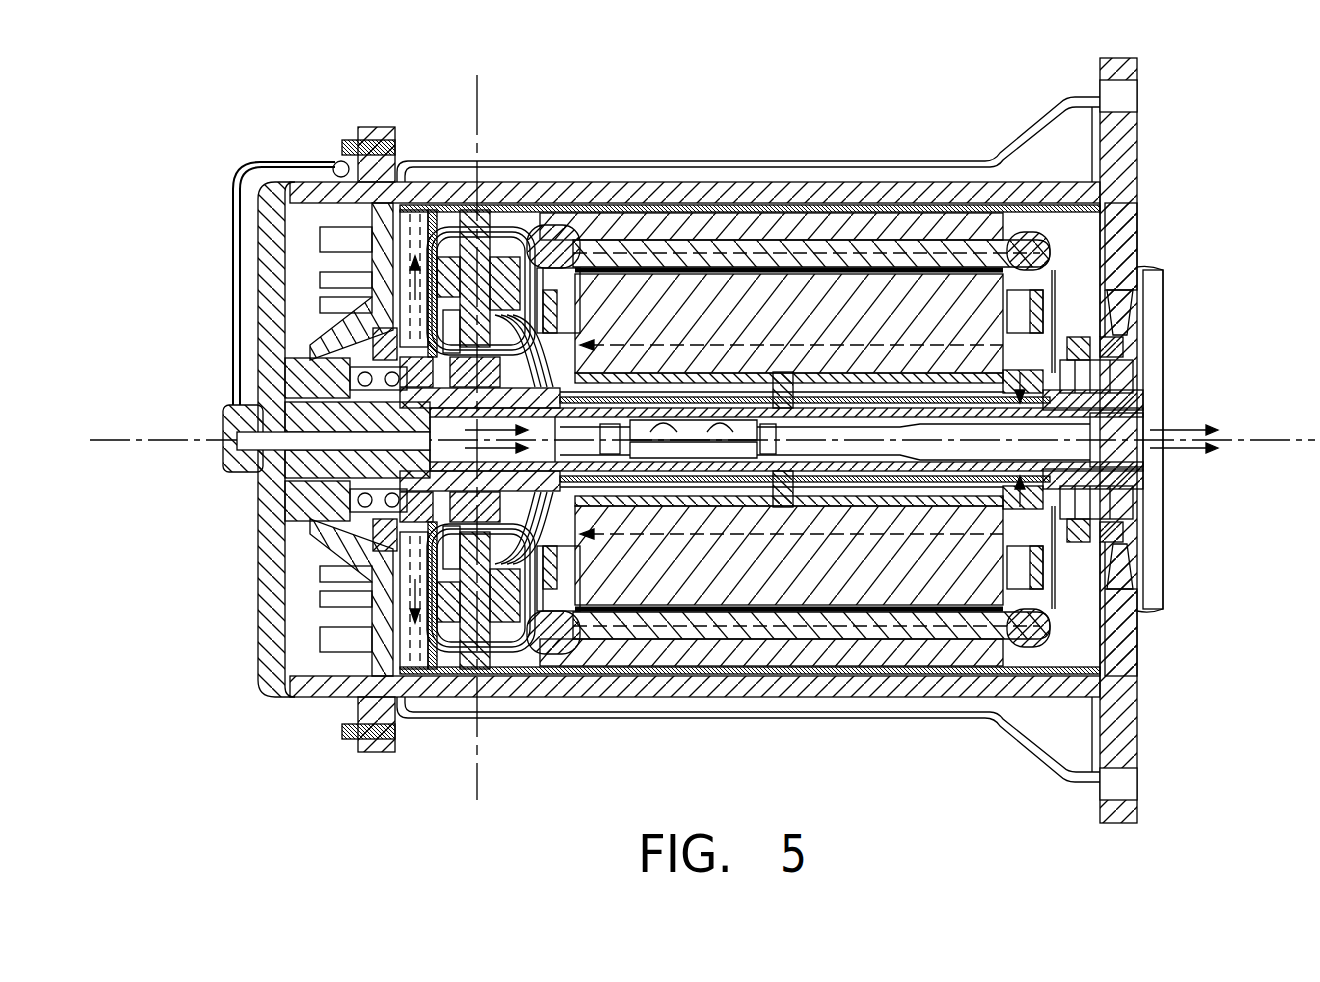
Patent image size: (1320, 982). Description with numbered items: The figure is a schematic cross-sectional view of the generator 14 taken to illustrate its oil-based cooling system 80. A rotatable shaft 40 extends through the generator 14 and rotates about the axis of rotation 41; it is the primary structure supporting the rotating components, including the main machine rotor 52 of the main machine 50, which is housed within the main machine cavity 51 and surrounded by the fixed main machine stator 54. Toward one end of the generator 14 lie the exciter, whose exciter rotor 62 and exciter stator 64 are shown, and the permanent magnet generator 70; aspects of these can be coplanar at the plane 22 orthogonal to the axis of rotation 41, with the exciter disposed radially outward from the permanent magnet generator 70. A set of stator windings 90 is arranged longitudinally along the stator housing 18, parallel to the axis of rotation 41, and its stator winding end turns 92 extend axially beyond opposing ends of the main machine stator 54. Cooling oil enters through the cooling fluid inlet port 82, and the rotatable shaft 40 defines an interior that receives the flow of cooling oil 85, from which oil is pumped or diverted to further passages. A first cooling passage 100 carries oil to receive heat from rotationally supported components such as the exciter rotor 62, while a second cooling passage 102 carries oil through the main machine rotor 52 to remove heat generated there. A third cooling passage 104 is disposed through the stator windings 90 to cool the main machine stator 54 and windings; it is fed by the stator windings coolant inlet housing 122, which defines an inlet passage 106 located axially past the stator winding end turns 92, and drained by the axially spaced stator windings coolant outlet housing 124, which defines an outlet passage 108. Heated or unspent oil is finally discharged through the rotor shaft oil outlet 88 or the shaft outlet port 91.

The generator 14 is at (770, 92).
The stator housing 18 is at (920, 197).
The plane 22 is at (477, 772).
The rotatable shaft 40 is at (1150, 380).
The axis of rotation 41 is at (170, 440).
The main machine 50 is at (826, 182).
The main machine cavity 51 is at (1058, 262).
The main machine rotor 52 is at (1000, 312).
The main machine stator 54 is at (806, 182).
The exciter rotor 62 is at (333, 293).
The exciter stator 64 is at (490, 237).
The permanent magnet generator 70 is at (393, 325).
The cooling system 80 is at (290, 808).
The cooling fluid inlet port 82 is at (300, 160).
The flow of cooling oil 85 is at (240, 404).
The rotor shaft oil outlet 88 is at (1180, 450).
The stator windings 90 is at (733, 242).
The shaft outlet port 91 is at (1160, 410).
The stator winding end turns 92 is at (566, 222).
The first cooling passage 100 is at (556, 327).
The second cooling passage 102 is at (666, 535).
The third cooling passage 104 is at (684, 162).
The inlet passage 106 is at (423, 230).
The outlet passage 108 is at (447, 217).
The stator windings coolant inlet housing 122 is at (390, 240).
The stator windings coolant outlet housing 124 is at (452, 228).